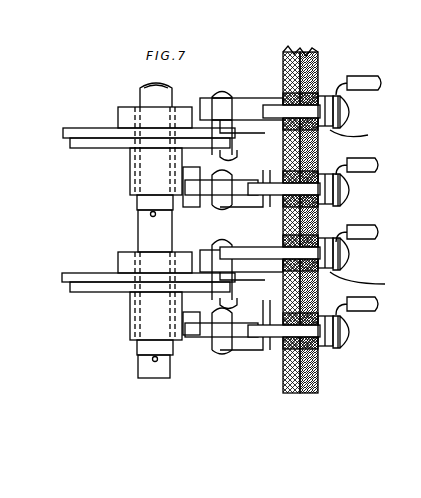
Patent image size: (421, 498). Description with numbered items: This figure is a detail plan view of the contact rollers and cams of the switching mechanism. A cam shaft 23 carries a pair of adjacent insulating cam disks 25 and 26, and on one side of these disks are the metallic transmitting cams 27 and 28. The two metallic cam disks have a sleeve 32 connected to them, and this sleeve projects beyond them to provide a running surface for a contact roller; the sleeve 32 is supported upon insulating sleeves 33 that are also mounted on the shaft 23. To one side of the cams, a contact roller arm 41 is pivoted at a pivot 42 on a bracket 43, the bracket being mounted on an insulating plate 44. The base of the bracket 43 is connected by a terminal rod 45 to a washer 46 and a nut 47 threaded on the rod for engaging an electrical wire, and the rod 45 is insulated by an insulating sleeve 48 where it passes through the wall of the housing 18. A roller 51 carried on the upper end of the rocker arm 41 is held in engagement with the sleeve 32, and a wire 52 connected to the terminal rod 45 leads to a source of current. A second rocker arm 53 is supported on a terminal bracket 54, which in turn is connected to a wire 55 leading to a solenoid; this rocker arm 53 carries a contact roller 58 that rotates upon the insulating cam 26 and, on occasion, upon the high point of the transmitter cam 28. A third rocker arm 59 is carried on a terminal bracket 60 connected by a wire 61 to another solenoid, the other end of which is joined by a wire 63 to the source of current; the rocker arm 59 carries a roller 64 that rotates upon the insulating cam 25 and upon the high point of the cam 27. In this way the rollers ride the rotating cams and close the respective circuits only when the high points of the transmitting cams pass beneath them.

The housing 18 is at (318, 158).
The shaft 23 is at (139, 222).
The insulating cam disk 25 is at (75, 131).
The insulating cam disk 26 is at (80, 277).
The cam 27 is at (70, 141).
The cam 28 is at (76, 292).
The sleeve 32 is at (130, 187).
The insulating sleeve 33 is at (137, 201).
The contact roller arm 41 is at (190, 197).
The pivot 42 is at (218, 212).
The bracket 43 is at (266, 198).
The insulating plate 44 is at (283, 386).
The terminal rod 45 is at (292, 116).
The washer 46 is at (330, 98).
The nut 47 is at (352, 113).
The insulating sleeve 48 is at (367, 211).
The roller 51 is at (186, 175).
The wire 52 is at (378, 311).
The second rocker arm 53 is at (244, 260).
The terminal bracket 54 is at (240, 282).
The wire 55 is at (378, 236).
The contact roller 58 is at (238, 306).
The third rocker arm 59 is at (233, 110).
The terminal bracket 60 is at (270, 98).
The wire 61 is at (378, 90).
The wire 63 is at (378, 169).
The roller 64 is at (238, 155).